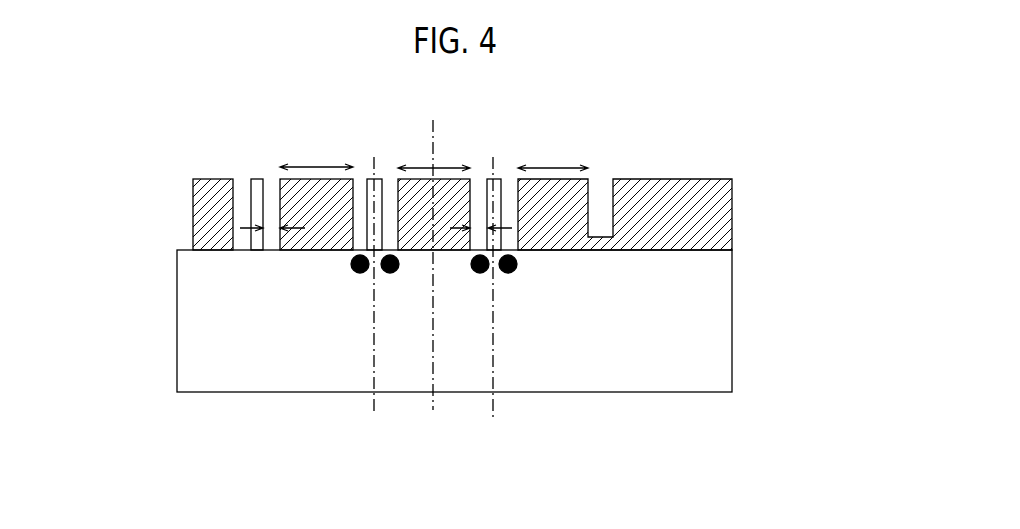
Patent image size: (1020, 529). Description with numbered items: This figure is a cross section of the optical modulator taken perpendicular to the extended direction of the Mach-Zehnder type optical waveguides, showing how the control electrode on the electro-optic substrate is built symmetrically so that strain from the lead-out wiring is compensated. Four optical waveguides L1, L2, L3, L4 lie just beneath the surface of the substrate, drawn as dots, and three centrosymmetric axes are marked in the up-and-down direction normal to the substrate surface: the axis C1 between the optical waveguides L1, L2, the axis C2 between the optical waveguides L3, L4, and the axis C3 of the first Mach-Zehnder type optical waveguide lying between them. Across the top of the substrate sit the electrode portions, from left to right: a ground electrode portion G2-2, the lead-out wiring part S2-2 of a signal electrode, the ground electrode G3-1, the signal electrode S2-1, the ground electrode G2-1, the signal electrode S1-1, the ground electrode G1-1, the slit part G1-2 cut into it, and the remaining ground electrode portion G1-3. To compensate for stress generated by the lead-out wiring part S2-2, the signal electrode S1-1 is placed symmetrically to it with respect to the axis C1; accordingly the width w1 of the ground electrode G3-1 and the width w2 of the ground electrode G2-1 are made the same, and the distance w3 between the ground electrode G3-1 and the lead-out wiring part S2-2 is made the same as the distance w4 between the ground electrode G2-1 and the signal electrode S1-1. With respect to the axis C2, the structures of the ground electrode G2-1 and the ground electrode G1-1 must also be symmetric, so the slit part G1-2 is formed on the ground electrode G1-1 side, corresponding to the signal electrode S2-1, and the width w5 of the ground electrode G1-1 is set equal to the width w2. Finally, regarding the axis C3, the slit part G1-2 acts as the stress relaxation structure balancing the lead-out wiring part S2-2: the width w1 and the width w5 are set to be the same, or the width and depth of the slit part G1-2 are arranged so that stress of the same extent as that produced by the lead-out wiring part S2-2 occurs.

The ground electrode portion G2-2 is at (193, 210).
The lead-out wiring part S2-2 is at (258, 178).
The ground electrode G3-1 is at (360, 183).
The signal electrode S2-1 is at (386, 180).
The ground electrode G2-1 is at (474, 185).
The signal electrode S1-1 is at (500, 178).
The ground electrode G1-1 is at (594, 188).
The slit part G1-2 is at (603, 190).
The ground electrode portion G1-3 is at (702, 197).
The width of ground electrode G3-1 w1 is at (316, 151).
The width of ground electrode G2-1 w2 is at (434, 153).
The distance between ground electrode G3-1 and lead-out wiring part S2-2 w3 is at (298, 232).
The distance between ground electrode G2-1 and signal electrode S1-1 w4 is at (454, 232).
The width of ground electrode G1-1 w5 is at (553, 153).
The centrosymmetric axis C1 is at (374, 303).
The centrosymmetric axis C2 is at (498, 303).
The centrosymmetric axis C3 is at (434, 285).
The optical waveguide L1 is at (355, 271).
The optical waveguide L2 is at (395, 271).
The optical waveguide L3 is at (476, 271).
The optical waveguide L4 is at (513, 271).